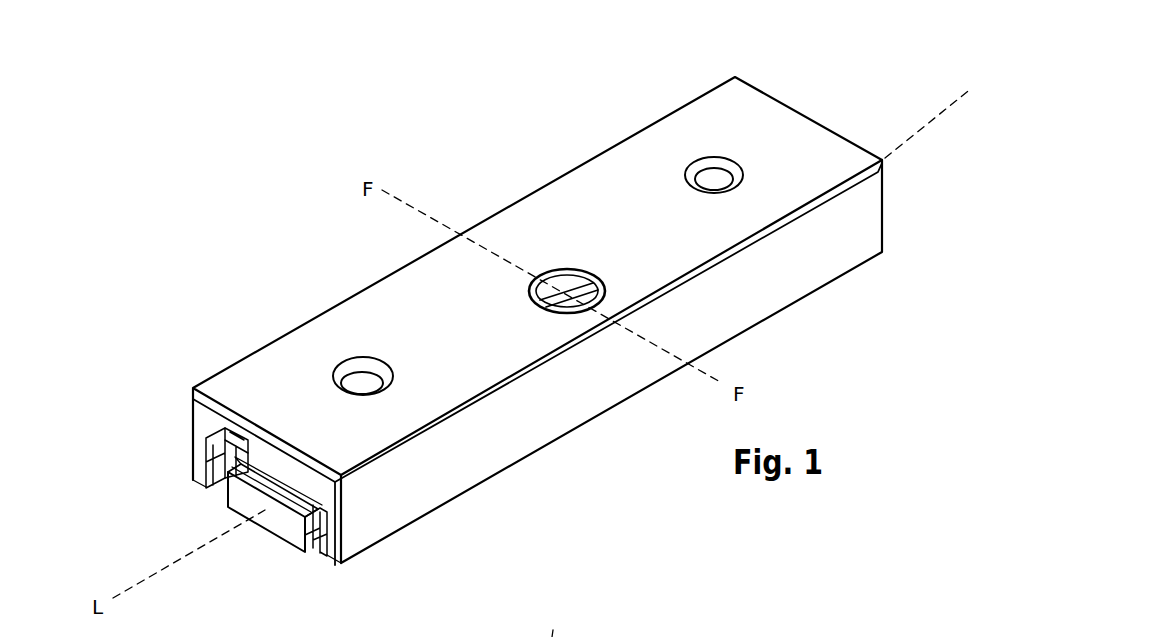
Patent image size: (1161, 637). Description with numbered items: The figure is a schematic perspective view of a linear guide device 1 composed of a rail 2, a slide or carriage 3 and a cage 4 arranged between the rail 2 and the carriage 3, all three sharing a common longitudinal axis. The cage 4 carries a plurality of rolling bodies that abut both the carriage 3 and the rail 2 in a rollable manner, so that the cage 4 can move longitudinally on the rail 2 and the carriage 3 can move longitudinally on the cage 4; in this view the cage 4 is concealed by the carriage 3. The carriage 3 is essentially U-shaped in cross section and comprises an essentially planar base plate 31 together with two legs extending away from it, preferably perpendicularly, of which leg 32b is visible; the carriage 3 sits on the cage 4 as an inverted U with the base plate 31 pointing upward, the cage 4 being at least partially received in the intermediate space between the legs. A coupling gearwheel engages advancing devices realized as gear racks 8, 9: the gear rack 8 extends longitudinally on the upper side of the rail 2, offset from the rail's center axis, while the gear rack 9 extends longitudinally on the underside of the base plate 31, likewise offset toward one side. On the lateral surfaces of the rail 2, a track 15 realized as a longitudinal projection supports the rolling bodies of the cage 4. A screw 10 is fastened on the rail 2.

The linear guide device 1 is at (578, 134).
The rail 2 is at (285, 515).
The carriage 3 is at (333, 340).
The cage 4 is at (555, 620).
The gear rack 8 is at (205, 455).
The gear rack 9 is at (237, 447).
The screw 10 is at (558, 268).
The track 15 is at (197, 463).
The base plate 31 is at (703, 128).
The leg 32b is at (548, 423).